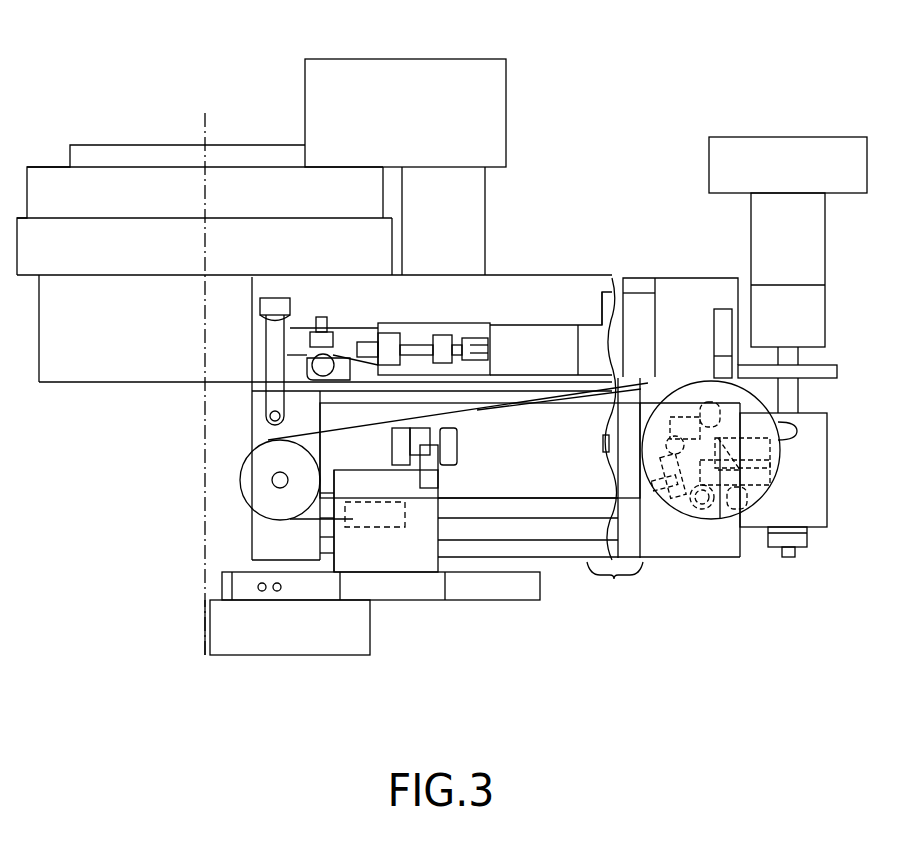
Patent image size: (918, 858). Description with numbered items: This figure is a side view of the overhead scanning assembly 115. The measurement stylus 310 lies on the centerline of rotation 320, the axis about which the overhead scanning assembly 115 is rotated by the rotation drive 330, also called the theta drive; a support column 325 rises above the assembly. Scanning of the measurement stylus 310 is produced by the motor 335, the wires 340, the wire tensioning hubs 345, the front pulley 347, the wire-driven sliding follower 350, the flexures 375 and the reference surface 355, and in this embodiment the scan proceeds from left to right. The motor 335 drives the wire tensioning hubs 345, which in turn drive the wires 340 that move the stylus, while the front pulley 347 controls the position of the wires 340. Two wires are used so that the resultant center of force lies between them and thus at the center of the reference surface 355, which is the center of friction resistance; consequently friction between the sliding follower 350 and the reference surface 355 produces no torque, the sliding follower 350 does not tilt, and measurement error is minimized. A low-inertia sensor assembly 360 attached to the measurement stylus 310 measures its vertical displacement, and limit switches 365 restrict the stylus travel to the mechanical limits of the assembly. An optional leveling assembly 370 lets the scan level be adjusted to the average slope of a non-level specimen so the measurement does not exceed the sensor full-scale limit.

The overhead scanning assembly 115 is at (808, 604).
The measurement stylus 310 is at (205, 655).
The centerline of rotation 320 is at (205, 118).
The support column 325 is at (475, 207).
The rotation drive 330 is at (273, 238).
The motor 335 is at (813, 325).
The wires 340 is at (490, 407).
The wire tensioning hubs 345 is at (757, 420).
The front pulley 347 is at (247, 470).
The wire-driven sliding follower 350 is at (383, 560).
The reference surface 355 is at (548, 530).
The low-inertia sensor assembly 360 is at (323, 640).
The limit switches 365 is at (457, 437).
The leveling assembly 370 is at (515, 337).
The flexures 375 is at (385, 527).